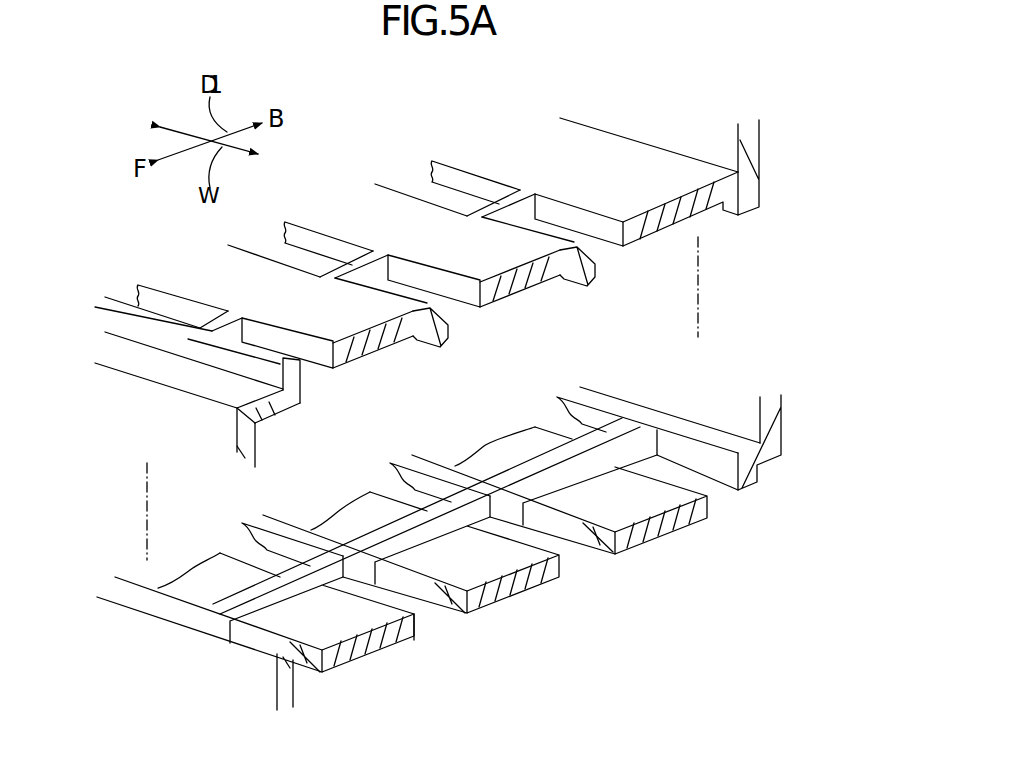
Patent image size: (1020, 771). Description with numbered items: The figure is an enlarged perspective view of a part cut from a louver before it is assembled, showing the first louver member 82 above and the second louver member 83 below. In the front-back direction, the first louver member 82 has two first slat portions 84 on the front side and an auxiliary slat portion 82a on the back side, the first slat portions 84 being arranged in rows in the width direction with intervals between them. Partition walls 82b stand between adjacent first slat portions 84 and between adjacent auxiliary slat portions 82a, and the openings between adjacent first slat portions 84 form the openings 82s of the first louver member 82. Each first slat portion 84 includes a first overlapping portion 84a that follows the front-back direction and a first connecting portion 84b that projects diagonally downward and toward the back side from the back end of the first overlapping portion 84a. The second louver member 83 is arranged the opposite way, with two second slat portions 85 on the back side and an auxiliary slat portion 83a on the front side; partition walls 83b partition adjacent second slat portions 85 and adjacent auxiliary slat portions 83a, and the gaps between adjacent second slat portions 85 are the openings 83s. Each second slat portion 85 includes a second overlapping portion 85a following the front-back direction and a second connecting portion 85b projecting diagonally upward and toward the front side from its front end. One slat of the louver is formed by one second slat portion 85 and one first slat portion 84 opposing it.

The first louver member 82 is at (202, 432).
The auxiliary slat portion 82a is at (607, 143).
The partition wall 82b is at (503, 198).
The opening 82s is at (396, 176).
The second louver member 83 is at (238, 677).
The auxiliary slat portion 83a is at (392, 638).
The partition wall 83b is at (615, 438).
The opening 83s is at (576, 559).
The first slat portion 84 is at (386, 369).
The first overlapping portion 84a is at (540, 279).
The first connecting portion 84b is at (597, 258).
The second slat portion 85 is at (502, 619).
The second overlapping portion 85a is at (643, 533).
The second connecting portion 85b is at (608, 543).